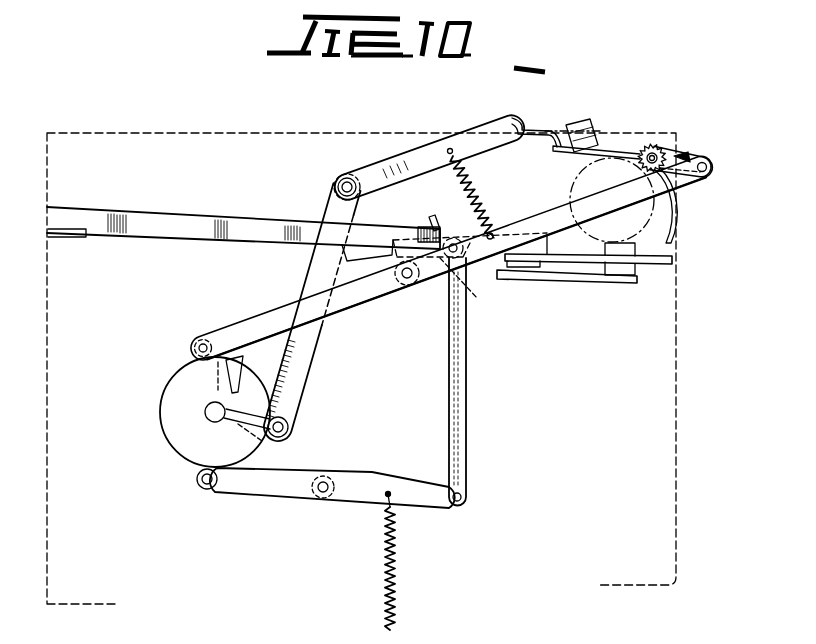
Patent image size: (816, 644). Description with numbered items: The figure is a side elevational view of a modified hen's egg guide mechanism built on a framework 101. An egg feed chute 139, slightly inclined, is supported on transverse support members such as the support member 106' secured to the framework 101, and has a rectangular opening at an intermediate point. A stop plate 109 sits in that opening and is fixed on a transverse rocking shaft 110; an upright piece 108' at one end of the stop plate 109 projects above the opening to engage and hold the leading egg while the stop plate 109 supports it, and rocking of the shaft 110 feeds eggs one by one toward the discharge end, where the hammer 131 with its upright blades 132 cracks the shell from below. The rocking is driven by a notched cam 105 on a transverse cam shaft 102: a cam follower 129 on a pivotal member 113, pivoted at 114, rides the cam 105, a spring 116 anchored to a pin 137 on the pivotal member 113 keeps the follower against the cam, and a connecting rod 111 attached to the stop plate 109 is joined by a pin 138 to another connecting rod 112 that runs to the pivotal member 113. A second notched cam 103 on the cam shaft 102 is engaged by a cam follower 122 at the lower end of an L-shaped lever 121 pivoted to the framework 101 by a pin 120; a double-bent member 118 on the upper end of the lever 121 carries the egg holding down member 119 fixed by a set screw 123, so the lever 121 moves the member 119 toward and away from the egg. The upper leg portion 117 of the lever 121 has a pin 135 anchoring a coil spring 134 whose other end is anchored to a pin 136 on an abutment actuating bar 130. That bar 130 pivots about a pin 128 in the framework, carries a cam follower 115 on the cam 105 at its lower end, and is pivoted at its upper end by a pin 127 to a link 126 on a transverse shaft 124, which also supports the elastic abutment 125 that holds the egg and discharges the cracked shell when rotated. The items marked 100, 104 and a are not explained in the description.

The stop tab 100 is at (73, 234).
The framework 101 is at (668, 400).
The transverse cam shaft 102 is at (179, 426).
The notched cam 103 is at (250, 403).
The pawl 104 is at (240, 363).
The notched cam 105 is at (184, 452).
The transverse support member 106' is at (535, 277).
The upright piece 108' is at (397, 229).
The stop plate 109 is at (372, 246).
The transverse rocking shaft 110 is at (358, 309).
The connecting rod 111 is at (470, 292).
The connecting rod 112 is at (467, 348).
The pivotal member 113 is at (432, 503).
The pivot 114 is at (323, 500).
The cam follower 115 is at (203, 338).
The spring 116 is at (398, 568).
The upper leg portion 117 is at (487, 126).
The double-bent member 118 is at (543, 125).
The egg holding down member 119 is at (582, 121).
The pin 120 is at (348, 178).
The L-shaped lever 121 is at (304, 370).
The cam follower 122 is at (293, 428).
The set screw 123 is at (600, 131).
The transverse shaft 124 is at (681, 149).
The elastic abutment 125 is at (659, 149).
The link 126 is at (707, 163).
The pin 127 is at (701, 178).
The pin 128 is at (407, 285).
The cam follower 129 is at (207, 491).
The abutment actuating bar 130 is at (352, 306).
The hammer 131 is at (595, 284).
The upright blades 132 is at (622, 276).
The coil spring 134 is at (470, 182).
The pin 135 is at (448, 148).
The pin 136 is at (499, 221).
The pin 137 is at (389, 492).
The pin 138 is at (473, 495).
The egg feed chute 139 is at (226, 221).
The path circle a is at (653, 221).